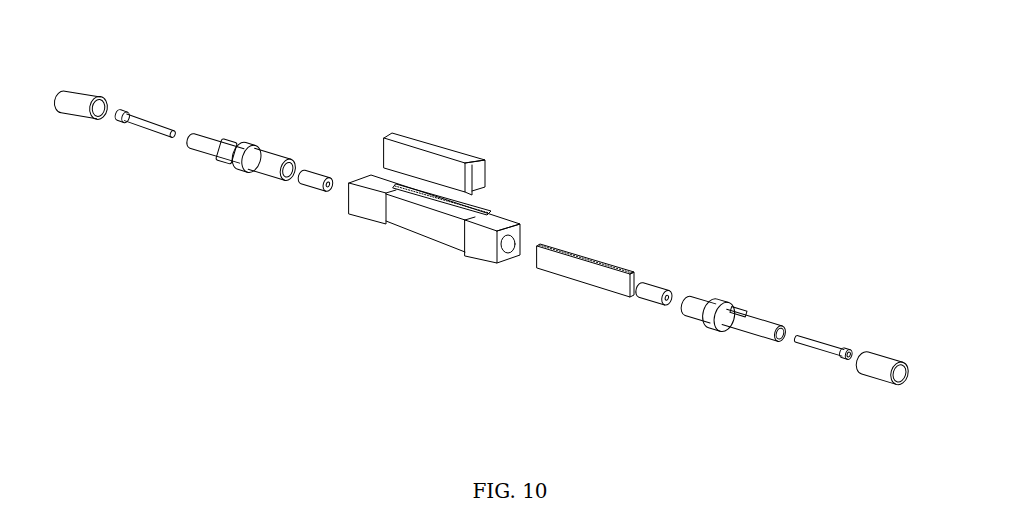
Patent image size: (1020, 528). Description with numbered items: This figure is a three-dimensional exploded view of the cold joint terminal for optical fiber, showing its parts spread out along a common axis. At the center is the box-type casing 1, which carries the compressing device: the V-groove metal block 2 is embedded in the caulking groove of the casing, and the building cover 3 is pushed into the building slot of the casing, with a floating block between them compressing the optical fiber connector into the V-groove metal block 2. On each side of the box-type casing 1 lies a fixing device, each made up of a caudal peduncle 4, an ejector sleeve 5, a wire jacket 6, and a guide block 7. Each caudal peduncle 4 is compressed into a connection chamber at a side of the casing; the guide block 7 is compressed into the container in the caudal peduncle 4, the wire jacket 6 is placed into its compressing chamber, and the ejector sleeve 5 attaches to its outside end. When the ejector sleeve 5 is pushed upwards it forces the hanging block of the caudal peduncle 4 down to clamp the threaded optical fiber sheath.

The box-type casing 1 is at (425, 220).
The V-groove metal block 2 is at (578, 272).
The building cover 3 is at (435, 162).
The caudal peduncle 4 is at (215, 152).
The ejector sleeve 5 is at (85, 100).
The wire jacket 6 is at (150, 125).
The guide block 7 is at (313, 178).